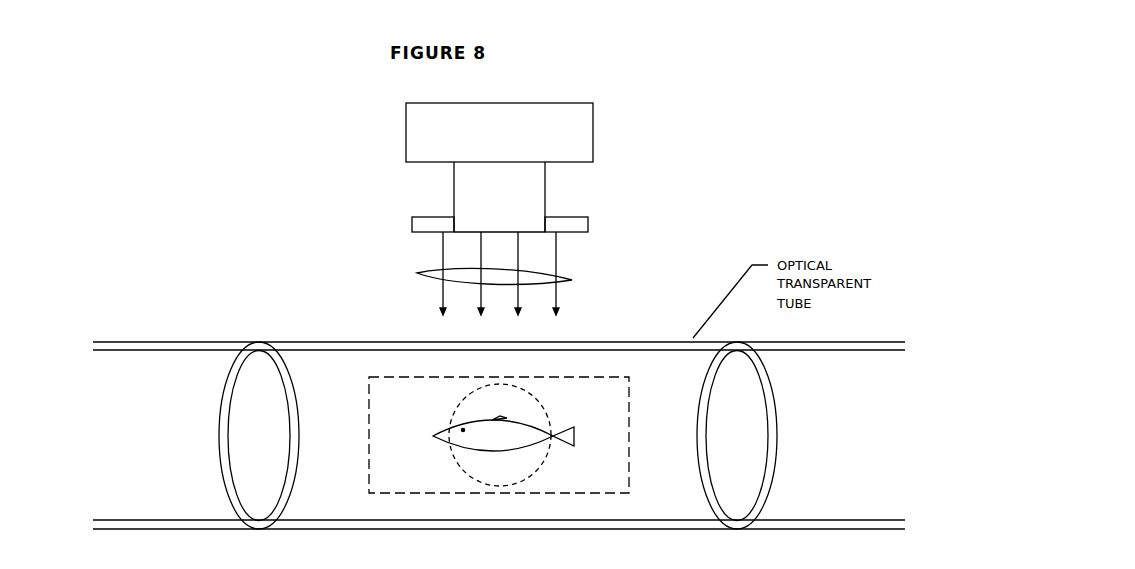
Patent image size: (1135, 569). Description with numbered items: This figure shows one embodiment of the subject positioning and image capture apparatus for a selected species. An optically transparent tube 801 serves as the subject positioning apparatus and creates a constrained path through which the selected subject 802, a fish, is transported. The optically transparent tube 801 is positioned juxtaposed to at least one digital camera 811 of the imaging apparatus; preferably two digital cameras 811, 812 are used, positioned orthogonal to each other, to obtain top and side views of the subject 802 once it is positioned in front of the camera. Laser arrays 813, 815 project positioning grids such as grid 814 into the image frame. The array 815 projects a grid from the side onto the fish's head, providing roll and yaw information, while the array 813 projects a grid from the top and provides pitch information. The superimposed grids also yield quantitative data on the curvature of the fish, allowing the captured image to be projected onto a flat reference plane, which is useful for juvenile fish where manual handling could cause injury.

The optically transparent tube 801 is at (600, 342).
The selected subject 802 is at (532, 450).
The digital camera 811 is at (593, 126).
The digital camera 812 is at (455, 402).
The laser array 813 is at (588, 217).
The positioning grid 814 is at (417, 273).
The laser array 815 is at (378, 367).